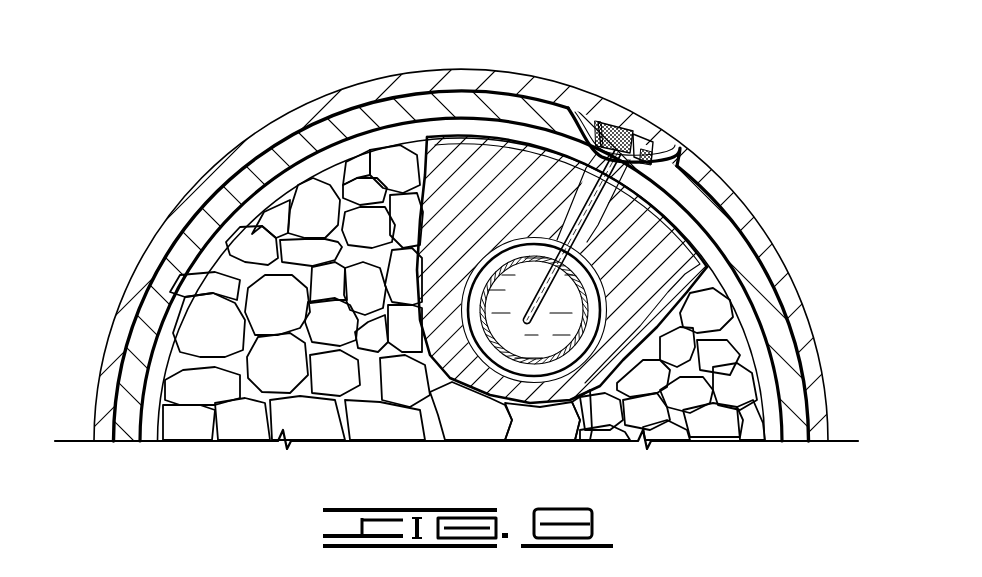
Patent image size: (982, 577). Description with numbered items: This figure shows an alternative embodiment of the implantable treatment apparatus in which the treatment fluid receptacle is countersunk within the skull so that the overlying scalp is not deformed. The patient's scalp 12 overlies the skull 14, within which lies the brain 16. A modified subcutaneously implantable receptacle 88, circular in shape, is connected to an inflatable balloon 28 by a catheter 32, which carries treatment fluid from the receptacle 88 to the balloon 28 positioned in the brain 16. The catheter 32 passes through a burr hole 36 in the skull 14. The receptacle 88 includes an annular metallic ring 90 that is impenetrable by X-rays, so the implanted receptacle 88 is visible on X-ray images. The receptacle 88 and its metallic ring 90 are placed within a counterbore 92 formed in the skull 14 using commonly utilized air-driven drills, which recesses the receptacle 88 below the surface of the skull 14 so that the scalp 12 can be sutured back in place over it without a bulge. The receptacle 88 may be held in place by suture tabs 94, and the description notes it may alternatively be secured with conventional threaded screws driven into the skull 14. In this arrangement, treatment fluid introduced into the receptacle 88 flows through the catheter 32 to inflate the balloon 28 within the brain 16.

The scalp 12 is at (132, 294).
The skull 14 is at (142, 338).
The brain 16 is at (193, 384).
The inflatable balloon 28 is at (593, 294).
The catheter means 32 is at (588, 222).
The burr hole 36 is at (562, 107).
The modified subcutaneously implantable receptacle 88 is at (628, 128).
The annular metallic ring 90 is at (580, 110).
The counterbore 92 is at (676, 158).
The suture tabs 94 is at (604, 120).